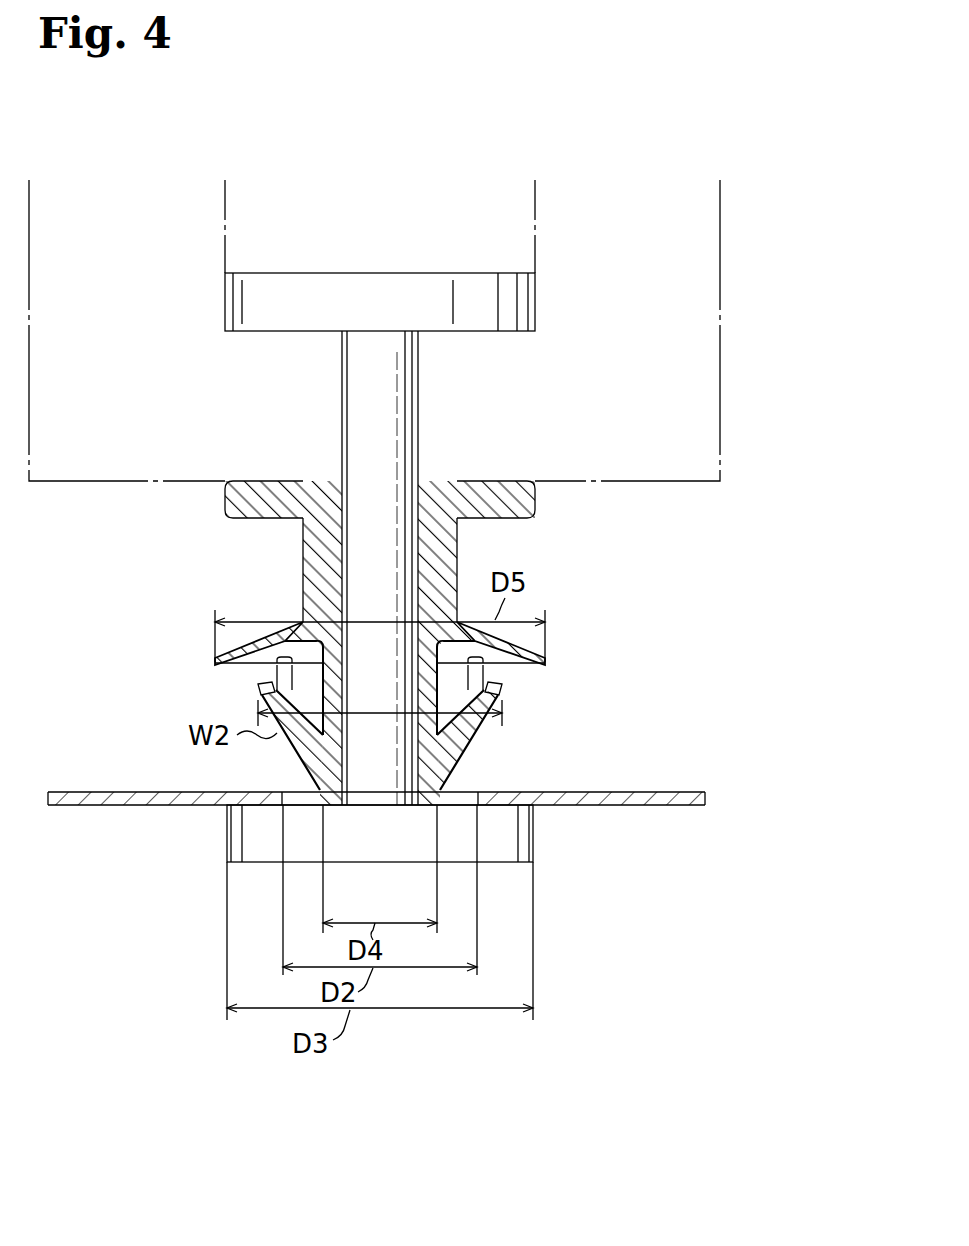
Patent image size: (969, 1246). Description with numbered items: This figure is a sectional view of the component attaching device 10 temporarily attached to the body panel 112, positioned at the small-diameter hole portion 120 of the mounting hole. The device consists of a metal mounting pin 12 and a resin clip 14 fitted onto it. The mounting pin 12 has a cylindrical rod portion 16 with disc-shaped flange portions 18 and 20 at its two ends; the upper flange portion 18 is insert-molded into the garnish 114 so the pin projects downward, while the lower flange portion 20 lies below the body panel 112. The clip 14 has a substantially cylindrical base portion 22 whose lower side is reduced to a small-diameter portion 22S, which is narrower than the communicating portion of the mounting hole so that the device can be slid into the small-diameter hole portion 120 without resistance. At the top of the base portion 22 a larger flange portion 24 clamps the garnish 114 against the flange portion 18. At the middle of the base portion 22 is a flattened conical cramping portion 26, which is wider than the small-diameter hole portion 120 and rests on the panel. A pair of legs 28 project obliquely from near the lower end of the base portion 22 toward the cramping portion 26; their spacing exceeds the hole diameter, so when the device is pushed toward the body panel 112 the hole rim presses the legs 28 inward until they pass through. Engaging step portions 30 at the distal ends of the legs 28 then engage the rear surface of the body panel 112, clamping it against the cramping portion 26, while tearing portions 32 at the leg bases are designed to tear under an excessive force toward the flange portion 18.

The component attaching device 10 is at (420, 688).
The mounting pin 12 is at (332, 493).
The clip 14 is at (535, 505).
The rod portion 16 is at (341, 391).
The flange portion 18 is at (225, 300).
The flange portion 20 is at (227, 840).
The base portion 22 is at (302, 562).
The small-diameter portion 22S is at (262, 692).
The flange portion 24 is at (225, 501).
The cramping portion 26 is at (212, 662).
The legs 28 is at (258, 700).
The engaging step portions 30 is at (257, 683).
The tearing portions 32 is at (305, 775).
The body panel 112 is at (667, 806).
The garnish 114 is at (722, 431).
The small-diameter hole portion 120 is at (473, 792).